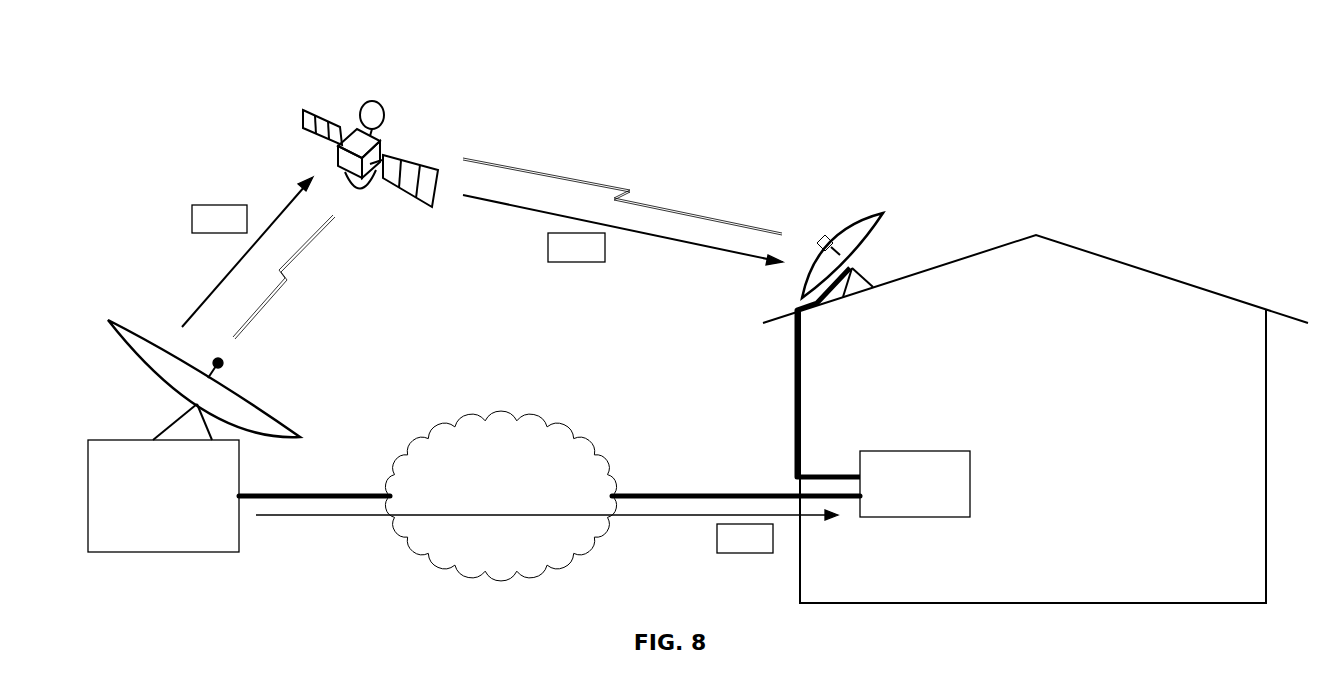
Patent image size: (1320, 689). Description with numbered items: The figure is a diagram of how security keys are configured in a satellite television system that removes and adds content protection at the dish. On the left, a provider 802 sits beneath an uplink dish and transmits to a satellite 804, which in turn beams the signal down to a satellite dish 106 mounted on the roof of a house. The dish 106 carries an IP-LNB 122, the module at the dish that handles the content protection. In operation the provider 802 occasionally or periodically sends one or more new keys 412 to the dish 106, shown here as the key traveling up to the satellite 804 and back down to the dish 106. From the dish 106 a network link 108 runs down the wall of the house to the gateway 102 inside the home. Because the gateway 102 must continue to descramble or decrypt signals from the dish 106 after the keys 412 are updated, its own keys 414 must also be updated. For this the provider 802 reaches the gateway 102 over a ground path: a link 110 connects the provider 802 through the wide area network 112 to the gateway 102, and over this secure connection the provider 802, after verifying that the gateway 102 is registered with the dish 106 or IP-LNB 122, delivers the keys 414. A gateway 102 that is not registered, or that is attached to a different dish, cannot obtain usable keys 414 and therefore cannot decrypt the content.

The satellite 804 is at (366, 104).
The provider 802 is at (194, 436).
The keys 412 is at (218, 205).
The wide area network (WAN) 112 is at (500, 496).
The link 110 is at (697, 494).
The keys 414 is at (740, 553).
The gateway 102 is at (915, 484).
The network link 108 is at (795, 383).
The satellite dish 106 is at (879, 217).
The IP-LNB 122 is at (823, 236).